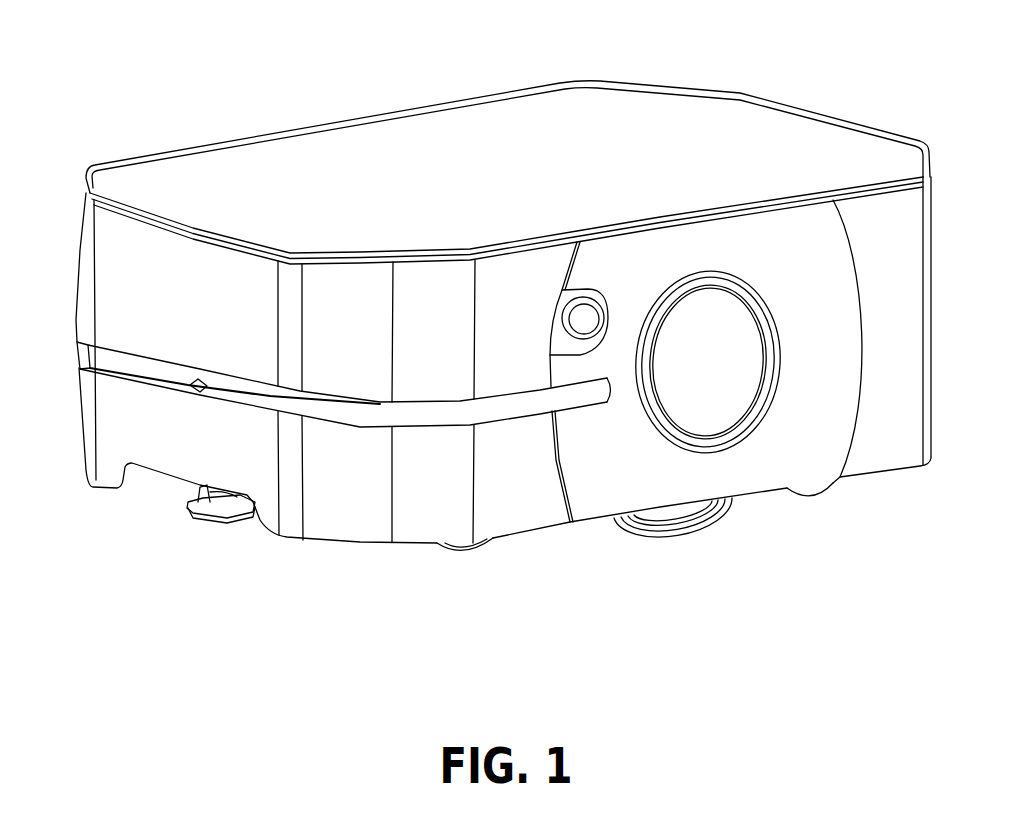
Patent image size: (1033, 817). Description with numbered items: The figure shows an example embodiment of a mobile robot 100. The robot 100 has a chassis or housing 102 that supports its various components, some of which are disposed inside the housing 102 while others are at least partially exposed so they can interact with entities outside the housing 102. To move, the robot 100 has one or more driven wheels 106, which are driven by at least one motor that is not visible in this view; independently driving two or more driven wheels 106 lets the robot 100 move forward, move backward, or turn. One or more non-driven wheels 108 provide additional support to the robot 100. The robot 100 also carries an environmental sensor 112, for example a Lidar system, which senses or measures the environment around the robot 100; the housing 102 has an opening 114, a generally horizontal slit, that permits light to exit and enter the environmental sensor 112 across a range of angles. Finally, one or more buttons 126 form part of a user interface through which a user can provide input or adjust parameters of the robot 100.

The mobile robot 100 is at (122, 109).
The housing 102 is at (470, 130).
The driven wheels 106 is at (675, 537).
The non-driven wheels 108 is at (465, 548).
The environmental sensor 112 is at (204, 391).
The opening 114 is at (368, 413).
The buttons 126 is at (587, 322).